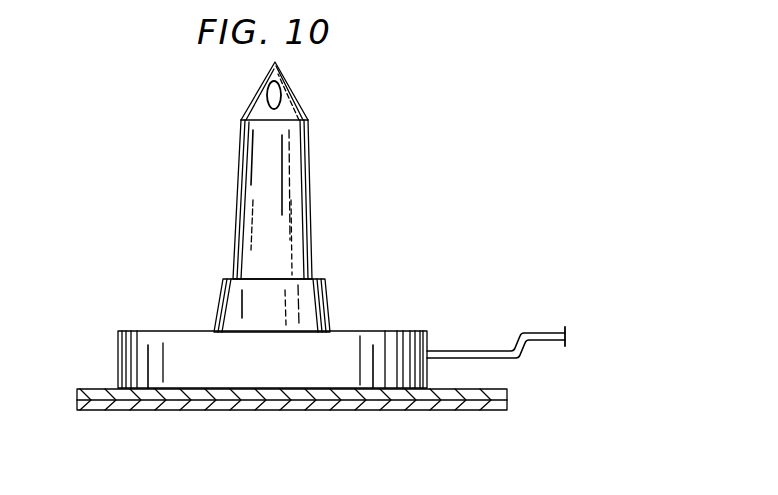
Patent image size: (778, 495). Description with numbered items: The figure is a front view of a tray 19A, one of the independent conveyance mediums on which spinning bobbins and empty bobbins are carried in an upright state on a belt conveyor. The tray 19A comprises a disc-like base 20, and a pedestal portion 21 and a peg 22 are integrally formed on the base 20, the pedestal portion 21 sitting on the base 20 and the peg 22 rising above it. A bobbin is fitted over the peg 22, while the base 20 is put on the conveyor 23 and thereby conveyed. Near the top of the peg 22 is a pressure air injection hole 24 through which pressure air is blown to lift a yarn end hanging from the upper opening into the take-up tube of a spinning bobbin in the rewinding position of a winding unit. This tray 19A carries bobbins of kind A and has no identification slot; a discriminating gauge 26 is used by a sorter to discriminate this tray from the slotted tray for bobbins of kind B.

The tray 19A is at (355, 270).
The disc-like base 20 is at (393, 336).
The pedestal portion 21 is at (224, 301).
The peg 22 is at (246, 183).
The conveyor 23 is at (262, 410).
The pressure air injection hole 24 is at (283, 95).
The discriminating gauge 26 is at (456, 350).